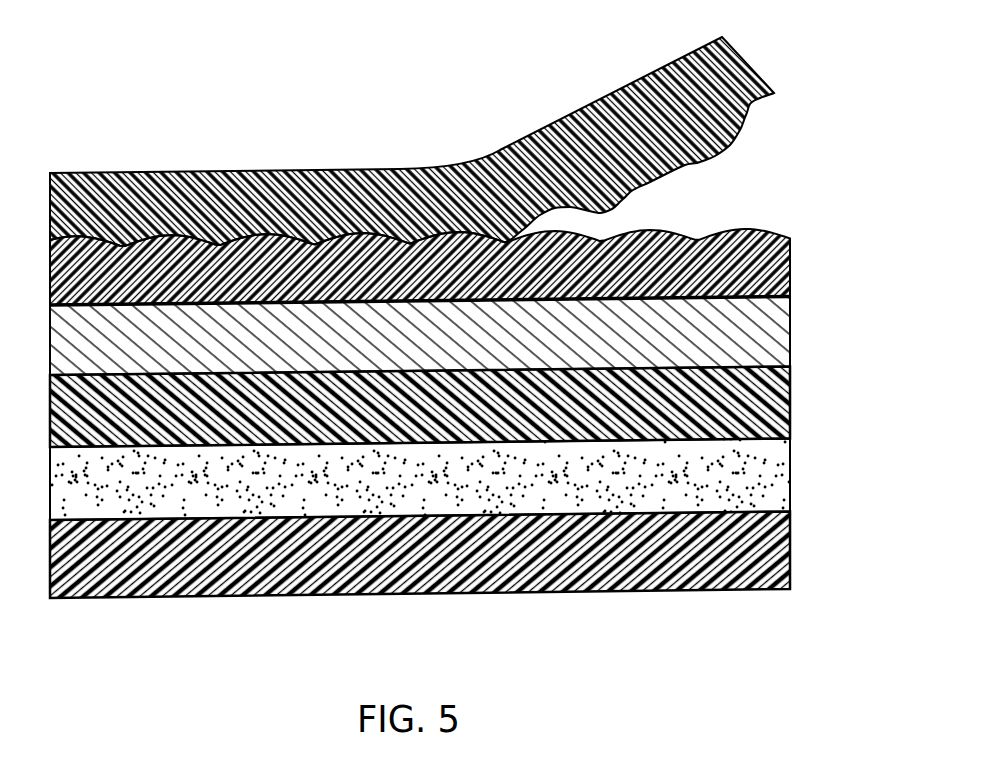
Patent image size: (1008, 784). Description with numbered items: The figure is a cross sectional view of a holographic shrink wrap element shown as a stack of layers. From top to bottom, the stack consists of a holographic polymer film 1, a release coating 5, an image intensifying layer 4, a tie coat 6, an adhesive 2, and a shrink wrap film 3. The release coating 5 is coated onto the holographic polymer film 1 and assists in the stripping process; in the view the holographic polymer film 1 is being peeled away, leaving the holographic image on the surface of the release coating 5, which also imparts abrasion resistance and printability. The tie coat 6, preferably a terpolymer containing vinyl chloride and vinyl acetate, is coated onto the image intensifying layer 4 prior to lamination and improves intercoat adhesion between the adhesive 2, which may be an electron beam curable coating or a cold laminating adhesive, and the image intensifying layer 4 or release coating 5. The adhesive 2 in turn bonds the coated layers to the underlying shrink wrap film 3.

The holographic polymer film 1 is at (772, 73).
The release coating 5 is at (798, 266).
The image intensifying layer 4 is at (798, 338).
The tie coat 6 is at (795, 400).
The adhesive 2 is at (797, 473).
The shrink wrap film 3 is at (800, 548).